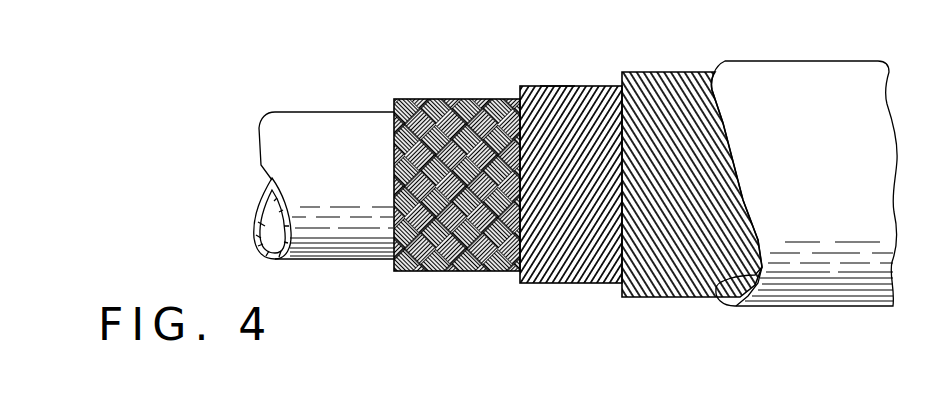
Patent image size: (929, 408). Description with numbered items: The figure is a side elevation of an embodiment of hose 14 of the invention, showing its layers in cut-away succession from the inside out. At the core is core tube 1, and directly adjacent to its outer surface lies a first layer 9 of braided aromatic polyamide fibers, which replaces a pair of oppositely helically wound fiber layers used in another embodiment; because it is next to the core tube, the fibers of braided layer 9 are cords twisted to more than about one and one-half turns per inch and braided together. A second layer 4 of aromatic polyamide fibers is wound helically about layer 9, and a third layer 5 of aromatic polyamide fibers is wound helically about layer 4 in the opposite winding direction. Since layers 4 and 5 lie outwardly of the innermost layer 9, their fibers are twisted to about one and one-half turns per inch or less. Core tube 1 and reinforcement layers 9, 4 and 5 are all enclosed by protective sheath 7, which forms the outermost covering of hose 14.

The core tube 1 is at (332, 111).
The first layer of braided aromatic polyamide fibers 9 is at (466, 98).
The second layer of aromatic polyamide fibers 4 is at (539, 284).
The hose 14 is at (556, 50).
The third layer of aromatic polyamide fibers 5 is at (667, 72).
The protective sheath 7 is at (776, 306).